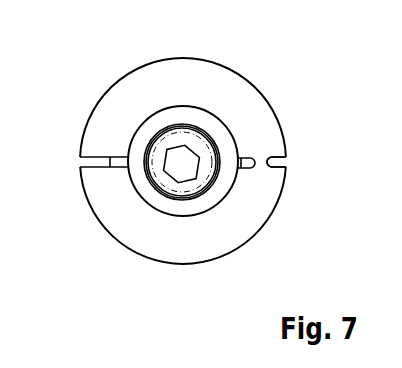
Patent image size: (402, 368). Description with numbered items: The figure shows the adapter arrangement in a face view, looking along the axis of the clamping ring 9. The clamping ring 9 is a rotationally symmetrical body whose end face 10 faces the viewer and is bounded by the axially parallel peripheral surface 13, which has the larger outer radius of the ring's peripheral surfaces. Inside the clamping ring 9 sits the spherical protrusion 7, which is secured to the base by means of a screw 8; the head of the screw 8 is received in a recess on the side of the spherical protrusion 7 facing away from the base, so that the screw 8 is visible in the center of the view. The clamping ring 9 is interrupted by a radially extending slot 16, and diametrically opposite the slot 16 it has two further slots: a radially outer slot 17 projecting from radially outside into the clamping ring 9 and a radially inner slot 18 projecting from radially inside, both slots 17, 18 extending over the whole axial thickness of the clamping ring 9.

The spherical protrusion 7 is at (211, 115).
The screw 8 is at (175, 138).
The clamping ring 9 is at (300, 159).
The end face 10 is at (256, 121).
The peripheral surface 13 is at (183, 264).
The slot 16 is at (84, 162).
The radially outer slot 17 is at (275, 165).
The radially inner slot 18 is at (247, 168).